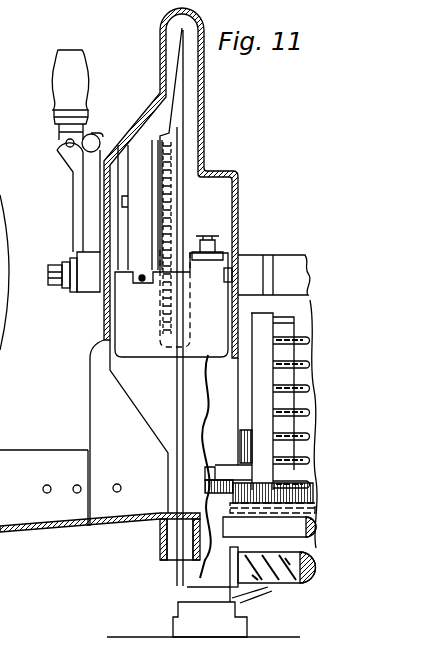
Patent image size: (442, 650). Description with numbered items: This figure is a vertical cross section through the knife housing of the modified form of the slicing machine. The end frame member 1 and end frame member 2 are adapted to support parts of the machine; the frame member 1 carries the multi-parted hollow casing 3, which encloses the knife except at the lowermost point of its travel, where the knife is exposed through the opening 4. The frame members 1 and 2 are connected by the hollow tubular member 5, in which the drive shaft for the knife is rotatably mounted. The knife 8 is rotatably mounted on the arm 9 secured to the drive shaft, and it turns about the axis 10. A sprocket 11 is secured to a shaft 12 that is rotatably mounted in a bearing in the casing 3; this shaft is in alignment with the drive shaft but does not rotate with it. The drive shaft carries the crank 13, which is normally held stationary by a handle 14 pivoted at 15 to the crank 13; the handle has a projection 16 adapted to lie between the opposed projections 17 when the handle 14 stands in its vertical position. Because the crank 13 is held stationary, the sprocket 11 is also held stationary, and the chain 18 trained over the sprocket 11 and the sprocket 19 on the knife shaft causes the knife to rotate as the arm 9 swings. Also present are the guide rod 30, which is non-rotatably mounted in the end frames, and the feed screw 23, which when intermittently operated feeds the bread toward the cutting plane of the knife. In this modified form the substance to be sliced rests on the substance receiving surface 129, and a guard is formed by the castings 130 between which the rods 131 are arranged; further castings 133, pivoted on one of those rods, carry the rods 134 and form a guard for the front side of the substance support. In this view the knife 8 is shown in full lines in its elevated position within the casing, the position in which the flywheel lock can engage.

The end frame member 1 is at (213, 584).
The end frame member 2 is at (140, 648).
The hollow casing 3 is at (0, 317).
The opening 4 is at (105, 418).
The hollow tubular member 5 is at (288, 263).
The knife 8 is at (180, 120).
The arm 9 is at (127, 318).
The axis 10 is at (172, 166).
The sprocket 11 is at (158, 324).
The shaft 12 is at (48, 268).
The crank 13 is at (76, 207).
The handle 14 is at (64, 62).
The pivot 15 is at (66, 144).
The projection 16 is at (90, 135).
The opposed projections 17 is at (106, 145).
The chain 18 is at (178, 222).
The sprocket 19 is at (173, 146).
The feed screw 23 is at (281, 584).
The guide rod 30 is at (306, 584).
The substance receiving surface 129 is at (300, 493).
The castings 130 is at (283, 316).
The rods 131 is at (299, 326).
The castings 133 is at (248, 338).
The rods 134 is at (273, 384).